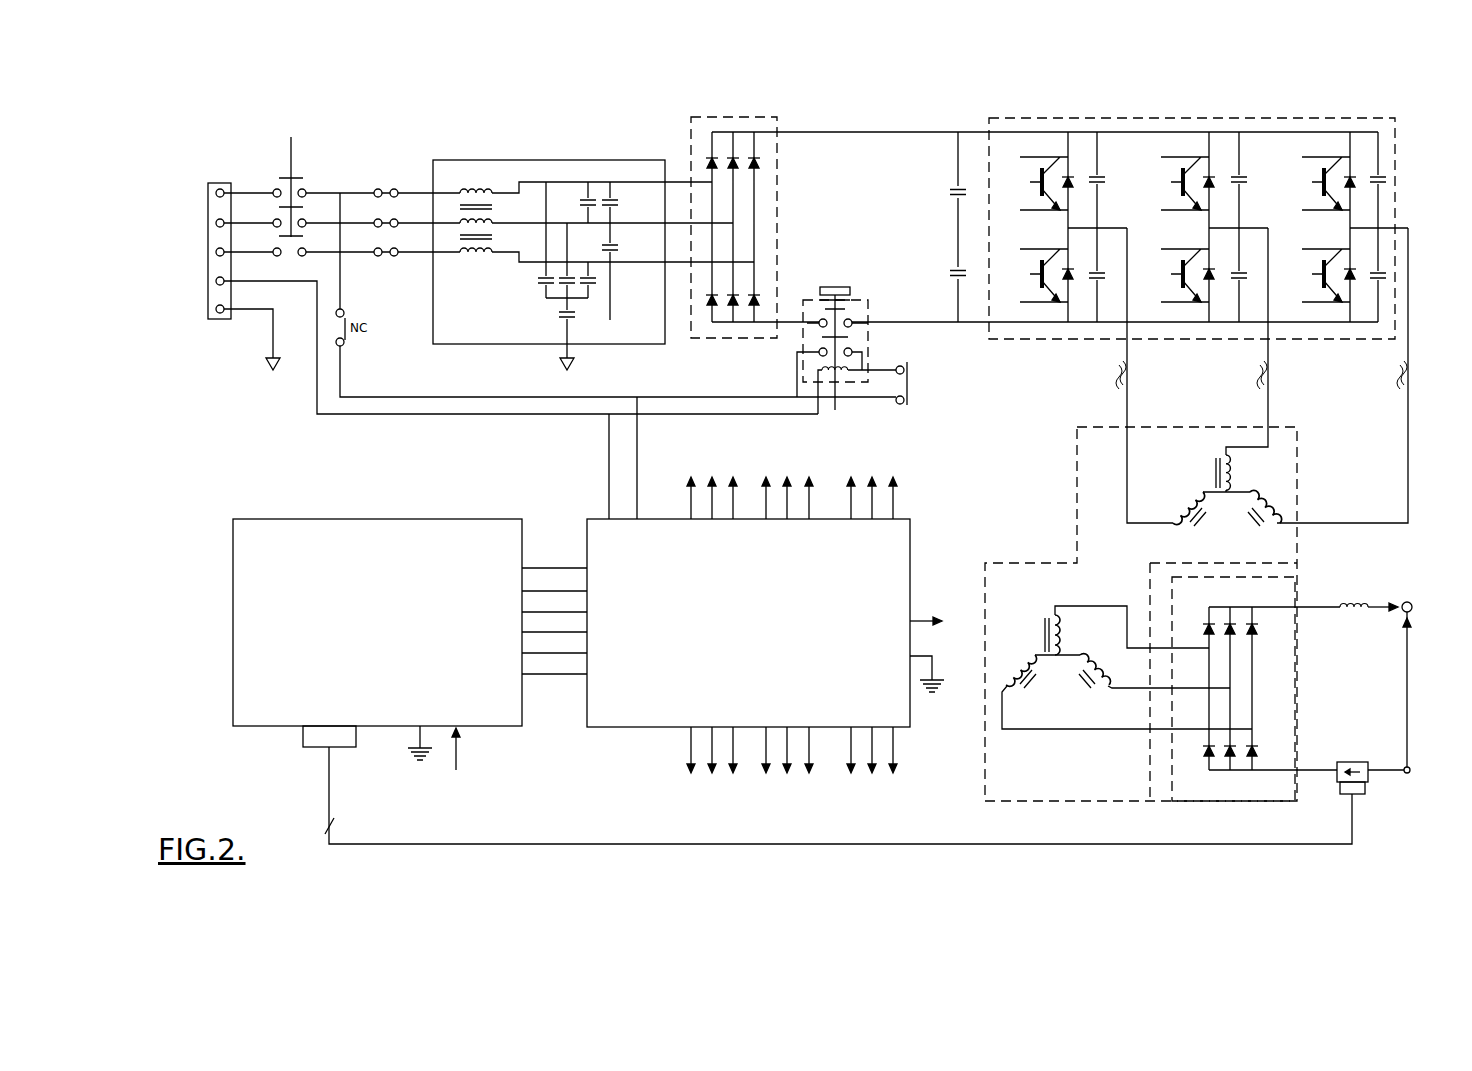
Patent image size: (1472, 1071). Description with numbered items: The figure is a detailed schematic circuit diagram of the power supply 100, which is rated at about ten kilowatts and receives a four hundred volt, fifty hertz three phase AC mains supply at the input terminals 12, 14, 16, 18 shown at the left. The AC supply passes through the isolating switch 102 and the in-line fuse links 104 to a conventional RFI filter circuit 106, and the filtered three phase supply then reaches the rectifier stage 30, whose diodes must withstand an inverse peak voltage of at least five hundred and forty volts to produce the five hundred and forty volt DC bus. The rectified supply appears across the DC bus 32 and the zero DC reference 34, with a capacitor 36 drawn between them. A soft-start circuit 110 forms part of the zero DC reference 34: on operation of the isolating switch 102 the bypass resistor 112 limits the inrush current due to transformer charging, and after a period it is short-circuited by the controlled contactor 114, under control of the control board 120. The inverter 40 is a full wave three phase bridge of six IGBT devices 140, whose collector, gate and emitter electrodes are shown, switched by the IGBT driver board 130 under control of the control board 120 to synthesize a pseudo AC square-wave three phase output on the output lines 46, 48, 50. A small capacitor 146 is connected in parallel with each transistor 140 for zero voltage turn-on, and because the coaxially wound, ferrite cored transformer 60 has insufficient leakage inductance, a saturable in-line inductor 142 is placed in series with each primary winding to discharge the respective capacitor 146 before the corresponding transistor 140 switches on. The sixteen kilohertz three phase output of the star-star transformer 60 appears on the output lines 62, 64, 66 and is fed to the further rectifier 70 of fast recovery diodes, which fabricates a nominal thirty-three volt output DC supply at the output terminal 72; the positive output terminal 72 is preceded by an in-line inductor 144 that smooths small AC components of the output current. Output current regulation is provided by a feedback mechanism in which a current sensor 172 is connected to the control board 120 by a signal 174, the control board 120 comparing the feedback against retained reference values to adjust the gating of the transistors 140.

The power supply 100 is at (204, 789).
The input terminal block 12 is at (212, 193).
The phase input terminals 14 is at (212, 223).
The neutral terminal 16 is at (212, 252).
The earth terminal 18 is at (212, 281).
The isolating switch 102 is at (297, 168).
The in-line fuse links 104 is at (394, 252).
The RFI filter circuit 106 is at (465, 165).
The rectifier stage 30 is at (698, 125).
The positive DC bus 32 is at (843, 132).
The zero DC reference 34 is at (900, 322).
The DC link capacitor 36 is at (948, 272).
The soft-start circuit 110 is at (878, 397).
The bypass resistor 112 is at (838, 286).
The controlled contactor 114 is at (870, 300).
The inverter 40 is at (1120, 130).
The IGBT devices 140 is at (1052, 157).
The capacitor 146 is at (1386, 172).
The output line 46 is at (1138, 345).
The output line 48 is at (1278, 345).
The third inverter output line 50 is at (1418, 338).
The in-line inductors 142 is at (1115, 376).
The transformer 60 is at (1028, 572).
The output line 62 is at (1127, 620).
The output line 64 is at (1137, 692).
The output line 66 is at (1195, 735).
The further rectifier 70 is at (1243, 597).
The output terminal 72 is at (1412, 603).
The in-line inductor 144 is at (1352, 612).
The current sensor 172 is at (1370, 785).
The signal 174 is at (570, 838).
The control board 120 is at (290, 555).
The IGBT driver board 130 is at (885, 552).